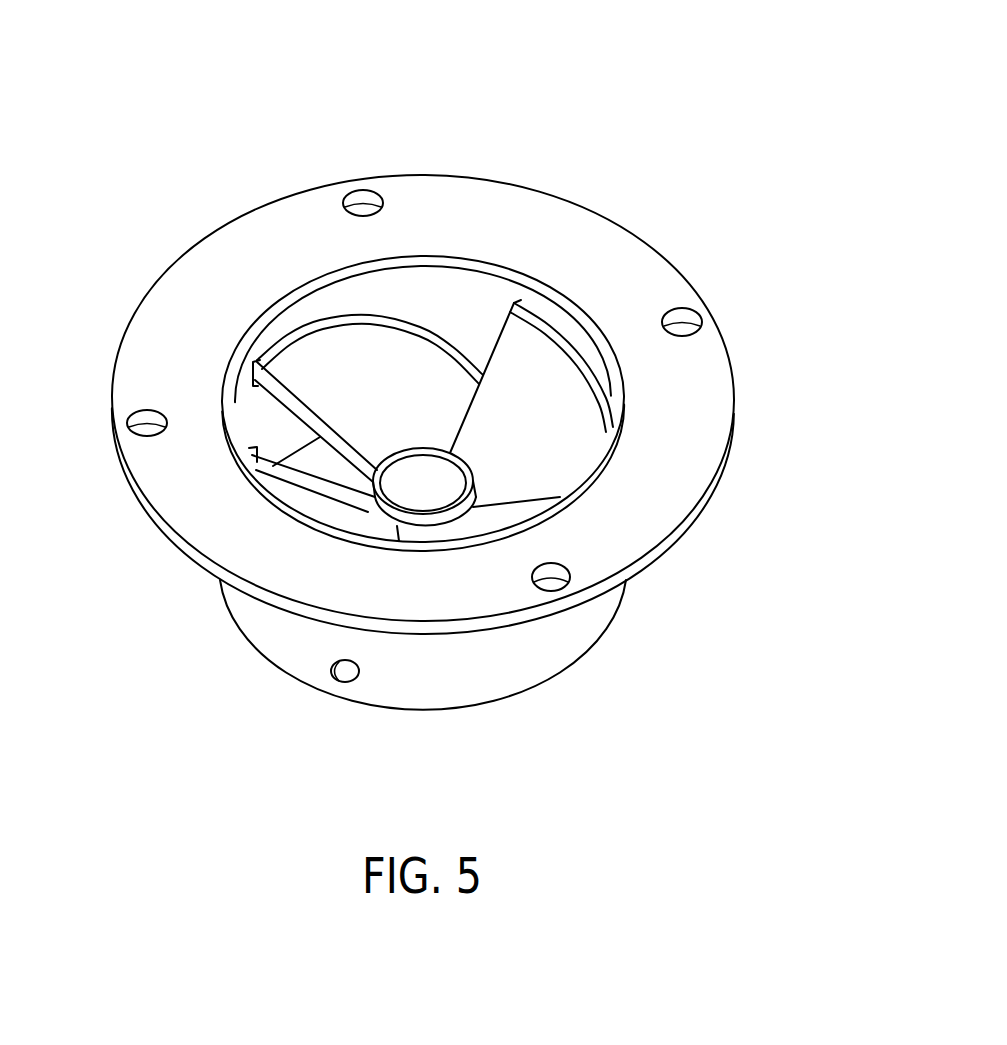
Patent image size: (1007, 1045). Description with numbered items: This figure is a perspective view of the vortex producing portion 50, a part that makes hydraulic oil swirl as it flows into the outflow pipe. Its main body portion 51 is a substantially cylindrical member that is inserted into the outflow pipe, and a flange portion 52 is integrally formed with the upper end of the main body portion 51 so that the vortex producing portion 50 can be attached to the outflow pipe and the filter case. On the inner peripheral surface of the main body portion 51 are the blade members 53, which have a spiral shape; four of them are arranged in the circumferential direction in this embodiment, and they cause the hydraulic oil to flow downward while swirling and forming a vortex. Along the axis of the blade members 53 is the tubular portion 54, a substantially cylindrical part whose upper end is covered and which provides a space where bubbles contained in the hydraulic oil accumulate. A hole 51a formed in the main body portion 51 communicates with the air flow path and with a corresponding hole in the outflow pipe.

The vortex producing portion 50 is at (737, 53).
The main body portion 51 is at (595, 617).
The hole 51a is at (346, 681).
The flange portion 52 is at (657, 280).
The blade member 53 is at (395, 355).
The tubular portion 54 is at (420, 477).